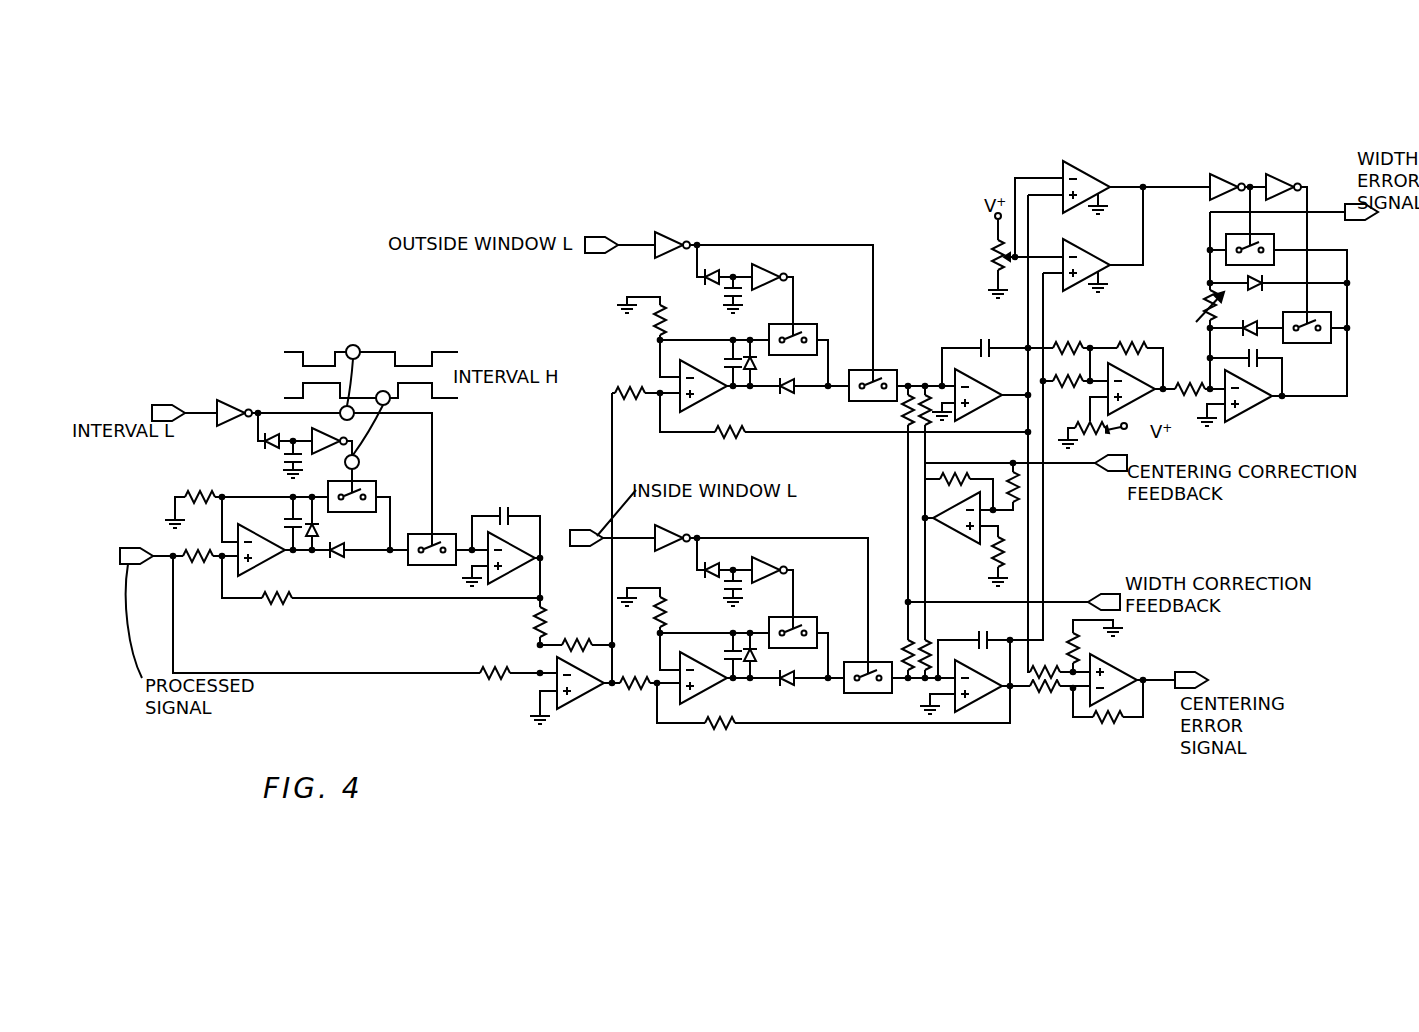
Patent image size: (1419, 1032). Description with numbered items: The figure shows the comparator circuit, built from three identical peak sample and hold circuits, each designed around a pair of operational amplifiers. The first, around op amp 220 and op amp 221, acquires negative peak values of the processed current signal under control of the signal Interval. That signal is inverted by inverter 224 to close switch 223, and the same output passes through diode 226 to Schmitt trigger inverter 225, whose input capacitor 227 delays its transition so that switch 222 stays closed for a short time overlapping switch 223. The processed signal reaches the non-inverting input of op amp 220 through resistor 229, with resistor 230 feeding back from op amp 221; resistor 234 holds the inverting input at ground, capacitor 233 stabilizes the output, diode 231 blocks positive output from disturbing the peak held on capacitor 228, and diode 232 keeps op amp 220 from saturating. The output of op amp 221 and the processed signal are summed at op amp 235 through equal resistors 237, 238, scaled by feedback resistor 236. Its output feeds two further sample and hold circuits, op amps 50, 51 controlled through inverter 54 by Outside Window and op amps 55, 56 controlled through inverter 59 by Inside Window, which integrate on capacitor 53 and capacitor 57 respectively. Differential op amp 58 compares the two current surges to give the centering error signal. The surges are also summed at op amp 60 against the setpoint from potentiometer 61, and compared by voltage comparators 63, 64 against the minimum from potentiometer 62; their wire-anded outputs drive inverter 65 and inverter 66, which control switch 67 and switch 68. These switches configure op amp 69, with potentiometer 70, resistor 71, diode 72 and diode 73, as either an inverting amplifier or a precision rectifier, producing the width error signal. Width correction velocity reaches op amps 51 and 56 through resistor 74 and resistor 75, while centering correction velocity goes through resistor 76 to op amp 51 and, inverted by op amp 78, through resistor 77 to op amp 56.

The inverter 224 is at (238, 402).
The Schmitt trigger inverter 225 is at (326, 426).
The diode 226 is at (268, 446).
The capacitor 227 is at (282, 462).
The resistor 234 is at (202, 494).
The capacitor 233 is at (285, 518).
The diode 232 is at (316, 531).
The switch 222 is at (366, 490).
The resistor 229 is at (192, 552).
The op amp 220 is at (240, 562).
The resistor 230 is at (278, 601).
The diode 231 is at (335, 556).
The switch 223 is at (418, 566).
The capacitor 228 is at (506, 508).
The op amp 221 is at (520, 568).
The resistor 237 is at (535, 623).
The feedback resistor 236 is at (578, 640).
The resistor 238 is at (498, 668).
The op amp 235 is at (582, 696).
The inverter 54 is at (665, 238).
The inverter 59 is at (665, 532).
The op amp 50 is at (705, 396).
The op amp 55 is at (706, 684).
The resistor 74 is at (906, 408).
The resistor 76 is at (920, 420).
The resistor 75 is at (905, 658).
The resistor 77 is at (920, 650).
The op amp 51 is at (985, 402).
The capacitor 53 is at (980, 344).
The potentiometer 62 is at (993, 250).
The voltage comparator 63 is at (1083, 177).
The voltage comparator 64 is at (1083, 255).
The inverter 65 is at (1218, 182).
The inverter 66 is at (1273, 182).
The switch 67 is at (1230, 236).
The potentiometer 70 is at (1203, 304).
The diode 72 is at (1257, 290).
The diode 73 is at (1247, 324).
The switch 68 is at (1332, 318).
The resistor 71 is at (1182, 386).
The op amp 60 is at (1138, 400).
The potentiometer 61 is at (1098, 431).
The op amp 69 is at (1255, 406).
The op amp 78 is at (970, 538).
The capacitor 57 is at (972, 636).
The op amp 56 is at (972, 676).
The op amp 58 is at (1110, 670).